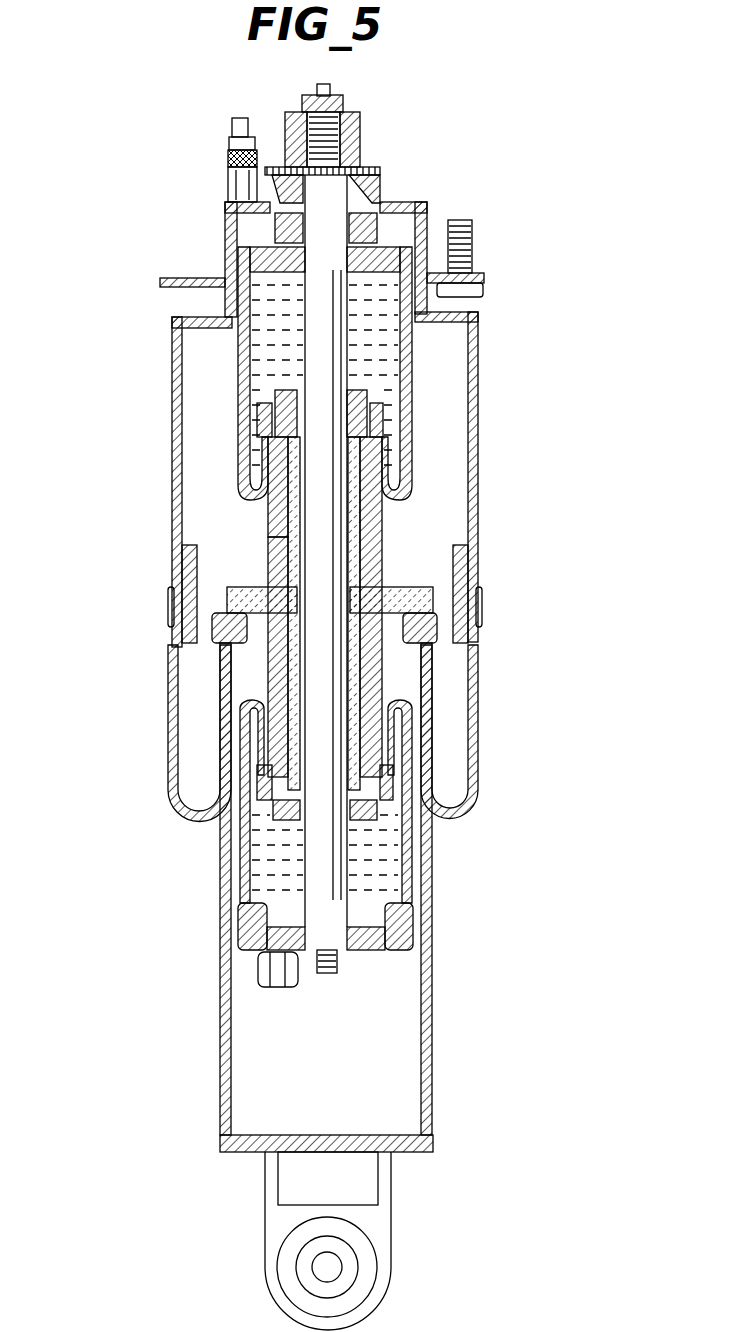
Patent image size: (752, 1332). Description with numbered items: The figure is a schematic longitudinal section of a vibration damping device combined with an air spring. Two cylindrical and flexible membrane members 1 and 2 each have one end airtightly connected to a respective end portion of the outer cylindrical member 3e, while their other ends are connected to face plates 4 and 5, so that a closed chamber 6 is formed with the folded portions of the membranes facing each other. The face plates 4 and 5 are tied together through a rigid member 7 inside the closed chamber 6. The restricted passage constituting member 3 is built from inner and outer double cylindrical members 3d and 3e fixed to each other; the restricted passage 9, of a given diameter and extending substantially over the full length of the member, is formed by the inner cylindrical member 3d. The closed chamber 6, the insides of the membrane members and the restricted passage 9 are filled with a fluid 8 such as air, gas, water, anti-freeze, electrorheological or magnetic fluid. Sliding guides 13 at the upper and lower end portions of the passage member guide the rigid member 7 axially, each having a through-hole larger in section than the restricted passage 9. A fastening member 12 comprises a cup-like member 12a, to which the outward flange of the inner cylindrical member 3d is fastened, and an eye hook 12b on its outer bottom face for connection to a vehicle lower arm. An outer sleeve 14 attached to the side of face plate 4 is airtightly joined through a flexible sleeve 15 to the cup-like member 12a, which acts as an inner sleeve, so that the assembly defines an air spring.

The cylindrical and flexible membrane member 1 is at (427, 408).
The cylindrical and flexible membrane member 2 is at (420, 864).
The restricted passage constituting member 3 is at (402, 566).
The inner cylindrical member 3d is at (270, 555).
The outer cylindrical member 3e is at (270, 517).
The face plate 4 is at (397, 243).
The face plate 5 is at (357, 953).
The closed chamber 6 is at (283, 331).
The rigid member 7 is at (313, 857).
The fluid 8 is at (260, 352).
The restricted passage 9 is at (352, 523).
The fastening member 12 is at (210, 1061).
The cup-like member 12a is at (433, 1020).
The eye hook 12b is at (390, 1270).
The sliding guide 13 is at (355, 372).
The outer sleeve 14 is at (480, 456).
The flexible sleeve 15 is at (483, 722).